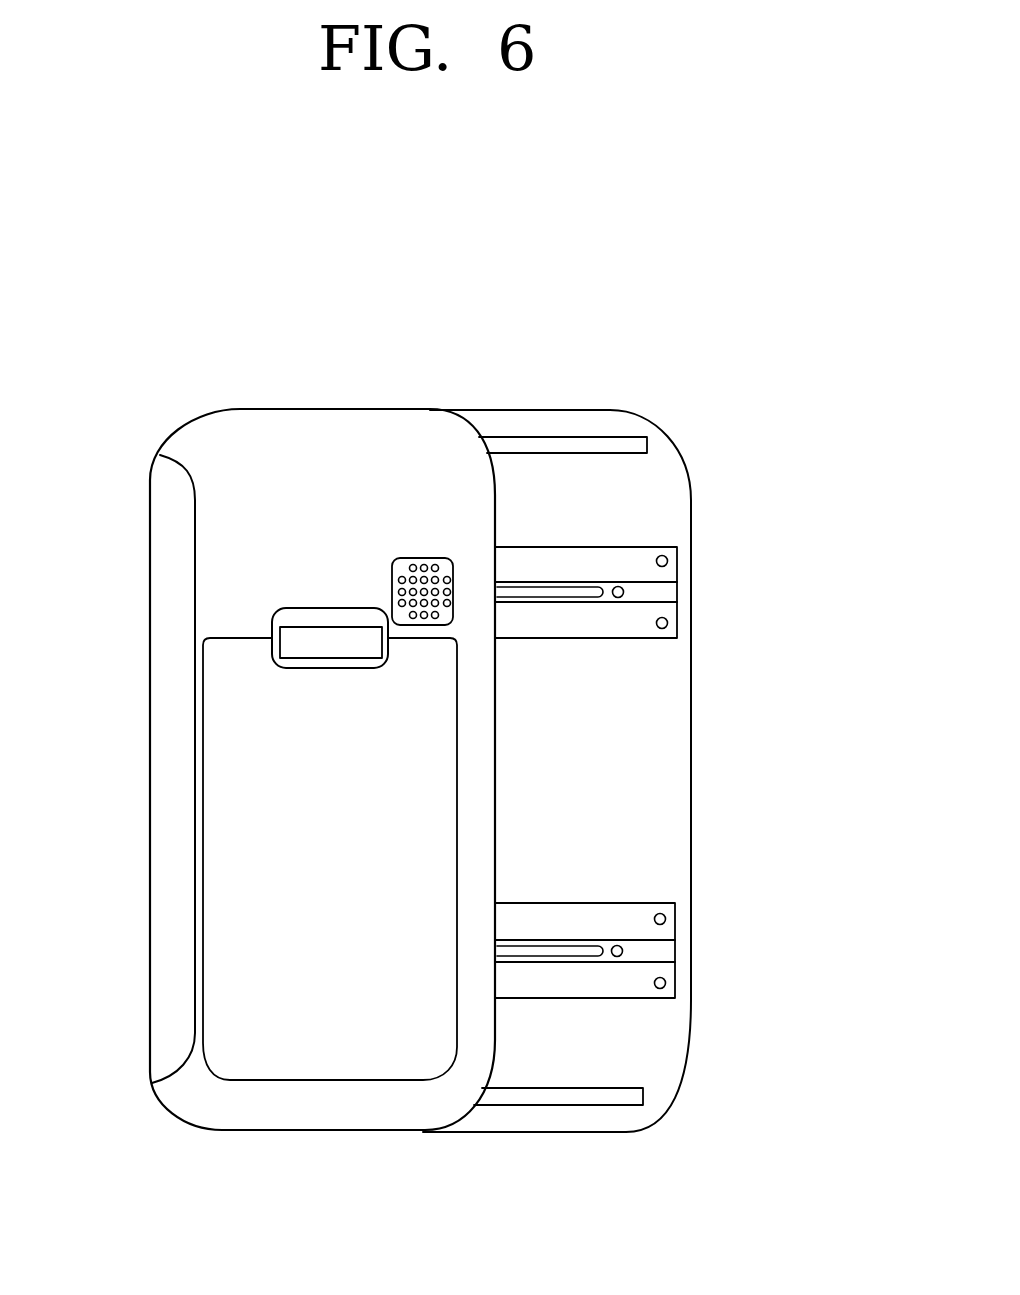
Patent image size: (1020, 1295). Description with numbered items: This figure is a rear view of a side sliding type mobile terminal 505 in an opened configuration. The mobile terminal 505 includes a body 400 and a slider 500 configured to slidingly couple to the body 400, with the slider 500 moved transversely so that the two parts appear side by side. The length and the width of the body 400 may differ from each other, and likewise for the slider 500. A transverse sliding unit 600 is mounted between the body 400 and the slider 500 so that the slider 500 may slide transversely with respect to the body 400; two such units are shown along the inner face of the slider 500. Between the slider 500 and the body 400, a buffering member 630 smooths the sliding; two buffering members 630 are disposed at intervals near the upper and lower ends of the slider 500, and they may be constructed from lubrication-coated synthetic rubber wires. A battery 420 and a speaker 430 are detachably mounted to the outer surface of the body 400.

The body 400 is at (184, 408).
The battery 420 is at (247, 780).
The speaker 430 is at (414, 575).
The slider 500 is at (706, 1025).
The side sliding type mobile terminal 505 is at (640, 348).
The transverse sliding unit 600 is at (523, 518).
The buffering member 630 is at (545, 445).